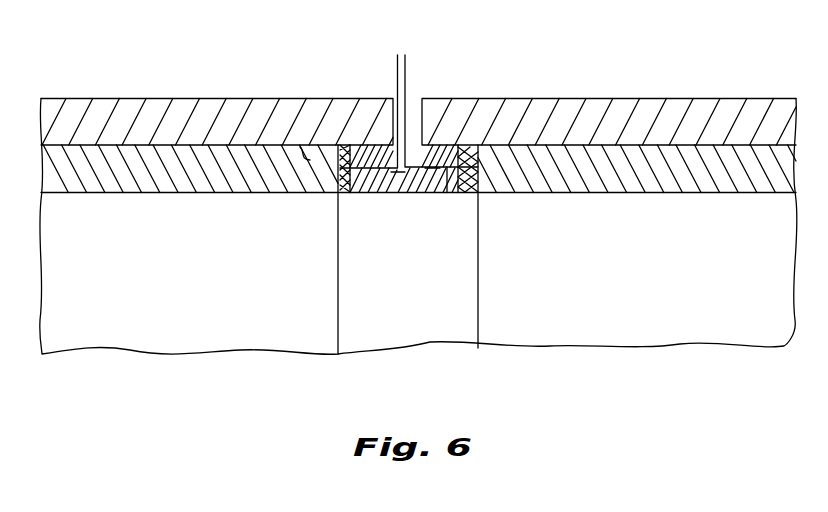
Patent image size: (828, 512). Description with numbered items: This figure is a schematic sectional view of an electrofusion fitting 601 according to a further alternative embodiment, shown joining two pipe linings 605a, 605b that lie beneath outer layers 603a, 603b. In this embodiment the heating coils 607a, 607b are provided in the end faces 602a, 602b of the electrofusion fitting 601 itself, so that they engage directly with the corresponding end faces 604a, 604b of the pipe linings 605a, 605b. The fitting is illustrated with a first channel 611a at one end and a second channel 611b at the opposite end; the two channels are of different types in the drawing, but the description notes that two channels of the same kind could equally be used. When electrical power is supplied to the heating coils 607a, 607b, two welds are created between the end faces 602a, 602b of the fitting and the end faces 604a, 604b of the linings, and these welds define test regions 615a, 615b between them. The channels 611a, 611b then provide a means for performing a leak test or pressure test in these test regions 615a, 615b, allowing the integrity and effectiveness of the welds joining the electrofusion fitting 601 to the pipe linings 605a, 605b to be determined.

The electrofusion fitting 601 is at (406, 145).
The end face of the electrofusion fitting 602a is at (305, 148).
The end face of the electrofusion fitting 602b is at (508, 150).
The first top dielectric layer 603a is at (175, 125).
The second top dielectric layer 603b is at (659, 123).
The end face of the pipe lining 604a is at (348, 205).
The end face of the pipe lining 604b is at (465, 201).
The pipe lining 605a is at (117, 173).
The pipe lining 605b is at (719, 163).
The heating coil 607a is at (354, 204).
The heating coil 607b is at (458, 168).
The first channel 611a is at (391, 172).
The second channel 611b is at (431, 168).
The test region 615a is at (322, 169).
The test region 615b is at (490, 170).